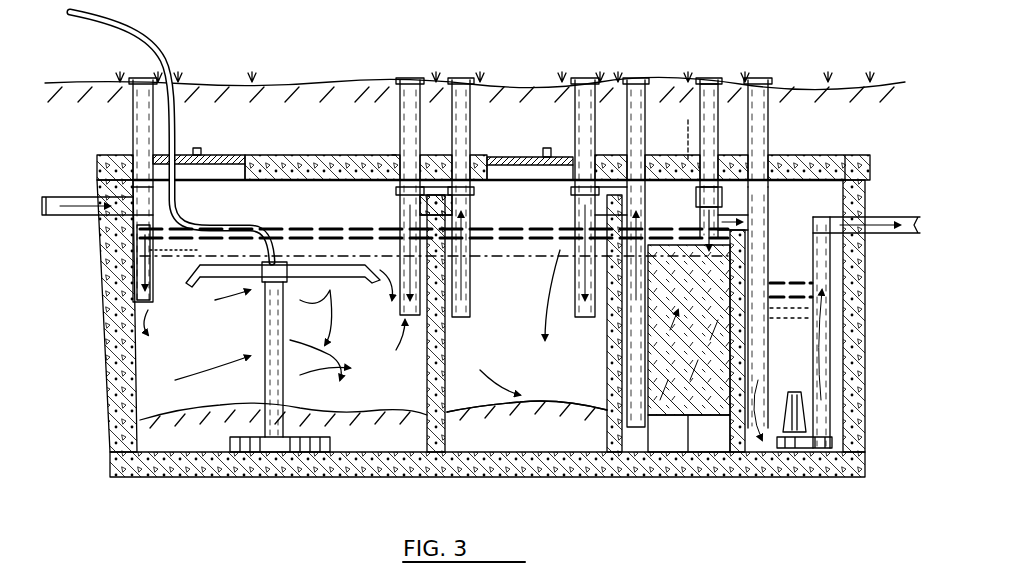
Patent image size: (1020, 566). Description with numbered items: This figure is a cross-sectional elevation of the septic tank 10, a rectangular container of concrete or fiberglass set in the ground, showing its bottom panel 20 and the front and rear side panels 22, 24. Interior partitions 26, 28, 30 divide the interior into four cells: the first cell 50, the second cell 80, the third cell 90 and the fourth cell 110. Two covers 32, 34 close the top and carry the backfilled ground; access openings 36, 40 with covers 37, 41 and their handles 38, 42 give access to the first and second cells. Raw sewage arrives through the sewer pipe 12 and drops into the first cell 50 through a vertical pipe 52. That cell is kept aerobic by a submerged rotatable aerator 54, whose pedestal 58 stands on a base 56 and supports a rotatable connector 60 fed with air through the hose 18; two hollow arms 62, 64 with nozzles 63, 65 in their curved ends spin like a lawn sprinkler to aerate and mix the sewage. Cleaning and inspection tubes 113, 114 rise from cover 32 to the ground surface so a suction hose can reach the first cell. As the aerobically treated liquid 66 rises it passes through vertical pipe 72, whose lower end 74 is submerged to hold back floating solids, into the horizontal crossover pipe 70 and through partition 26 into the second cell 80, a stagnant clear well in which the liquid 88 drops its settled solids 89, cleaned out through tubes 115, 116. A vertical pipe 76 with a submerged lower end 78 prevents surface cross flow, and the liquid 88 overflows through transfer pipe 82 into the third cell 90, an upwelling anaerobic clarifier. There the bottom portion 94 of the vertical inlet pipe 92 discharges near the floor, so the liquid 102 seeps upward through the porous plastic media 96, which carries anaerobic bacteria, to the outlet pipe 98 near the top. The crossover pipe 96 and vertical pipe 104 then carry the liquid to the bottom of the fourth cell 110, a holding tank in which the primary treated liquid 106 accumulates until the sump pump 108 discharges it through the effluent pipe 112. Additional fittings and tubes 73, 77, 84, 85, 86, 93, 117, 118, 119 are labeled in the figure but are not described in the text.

The septic tank 10 is at (487, 321).
The sewer pipe 12 is at (84, 192).
The hose 18 is at (158, 33).
The bottom panel 20 is at (248, 478).
The front side panel 22 is at (107, 392).
The rear side panel 24 is at (866, 357).
The interior partition 26 is at (430, 456).
The interior partition 28 is at (612, 456).
The interior partition 30 is at (735, 455).
The cover 32 is at (322, 157).
The cover 34 is at (795, 157).
The access opening 36 is at (246, 166).
The cover 37 is at (203, 154).
The handle 38 is at (196, 150).
The access opening 40 is at (520, 183).
The cover 41 is at (544, 156).
The handle 42 is at (556, 150).
The first cell 50 is at (282, 205).
The vertical pipe 52 is at (112, 274).
The submerged rotatable aerator 54 is at (290, 270).
The base 56 is at (230, 445).
The pedestal 58 is at (264, 345).
The rotatable connector 60 is at (242, 277).
The hollow arm 62 is at (202, 296).
The nozzle 63 is at (193, 278).
The hollow arm 64 is at (305, 282).
The nozzle 65 is at (302, 306).
The aerobically treated liquid 66 is at (300, 227).
The horizontal crossover pipe 70 is at (415, 222).
The vertical pipe 72 is at (395, 276).
The pipe flange 73 is at (396, 196).
The lower end 74 is at (402, 318).
The vertical pipe 76 is at (470, 270).
The pipe flange 77 is at (474, 196).
The lower end 78 is at (470, 300).
The second cell 80 is at (515, 227).
The transfer pipe 82 is at (572, 266).
The upflow 84 is at (573, 297).
The riser pipe 85 is at (566, 178).
The pipe flange 86 is at (580, 316).
The liquid 88 is at (522, 232).
The settled solids 89 is at (540, 404).
The third cell 90 is at (698, 221).
The vertical inlet pipe 92 is at (647, 380).
The conduit 93 is at (688, 150).
The bottom portion 94 is at (645, 425).
The porous plastic media 96 is at (752, 222).
The outlet pipe 98 is at (700, 84).
The liquid 102 is at (694, 197).
The vertical pipe 104 is at (770, 356).
The primary treated liquid 106 is at (776, 285).
The sump pump 108 is at (808, 410).
The fourth cell 110 is at (828, 205).
The effluent pipe 112 is at (880, 216).
The cleaning and inspection tube 113 is at (131, 121).
The cleaning and inspection tube 114 is at (398, 120).
The tube 115 is at (438, 90).
The tube 116 is at (597, 80).
The riser pipe 117 is at (630, 80).
The riser pipe 118 is at (742, 92).
The riser pipe 119 is at (760, 80).